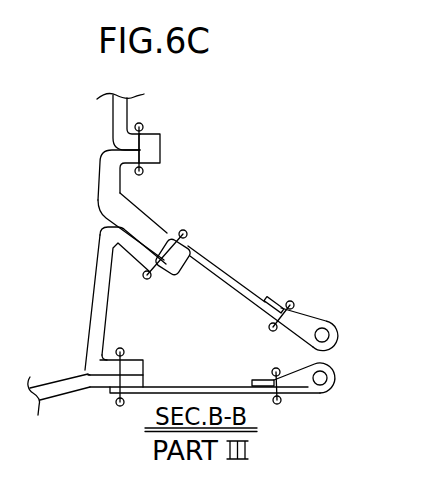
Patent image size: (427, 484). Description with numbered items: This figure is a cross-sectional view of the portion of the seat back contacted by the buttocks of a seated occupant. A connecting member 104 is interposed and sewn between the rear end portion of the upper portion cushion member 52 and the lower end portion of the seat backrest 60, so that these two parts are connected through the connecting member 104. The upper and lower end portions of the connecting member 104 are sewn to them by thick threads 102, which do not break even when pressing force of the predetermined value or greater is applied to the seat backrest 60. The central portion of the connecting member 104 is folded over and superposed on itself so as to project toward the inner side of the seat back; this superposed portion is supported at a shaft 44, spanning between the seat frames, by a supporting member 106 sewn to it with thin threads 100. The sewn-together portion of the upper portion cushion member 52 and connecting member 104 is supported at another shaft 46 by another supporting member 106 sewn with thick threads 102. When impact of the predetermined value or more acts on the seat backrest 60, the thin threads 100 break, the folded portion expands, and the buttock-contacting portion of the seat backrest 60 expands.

The seat backrest 60 is at (108, 125).
The thick threads 102 is at (143, 125).
The connecting member 104 is at (116, 207).
The thin threads 100 is at (188, 228).
The supporting member 106 is at (250, 293).
The shaft 44 is at (335, 324).
The shaft 46 is at (335, 381).
The upper portion cushion member 52 is at (60, 383).